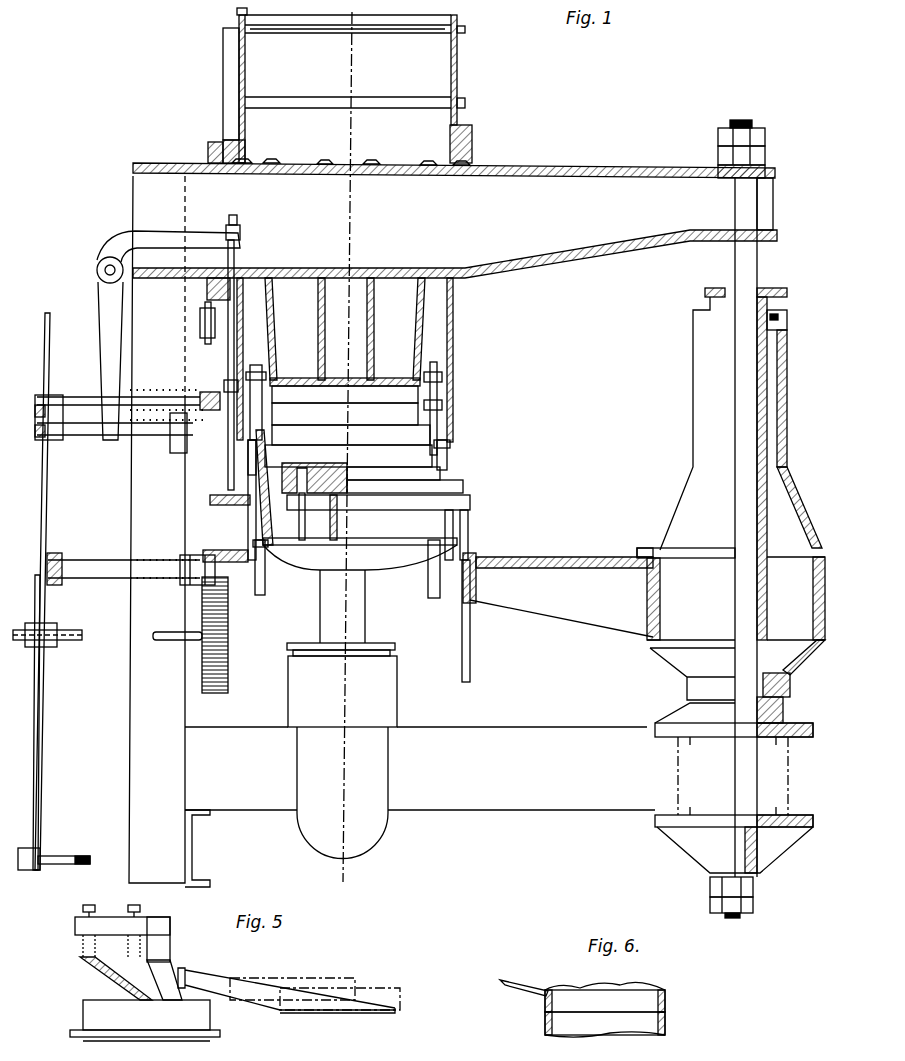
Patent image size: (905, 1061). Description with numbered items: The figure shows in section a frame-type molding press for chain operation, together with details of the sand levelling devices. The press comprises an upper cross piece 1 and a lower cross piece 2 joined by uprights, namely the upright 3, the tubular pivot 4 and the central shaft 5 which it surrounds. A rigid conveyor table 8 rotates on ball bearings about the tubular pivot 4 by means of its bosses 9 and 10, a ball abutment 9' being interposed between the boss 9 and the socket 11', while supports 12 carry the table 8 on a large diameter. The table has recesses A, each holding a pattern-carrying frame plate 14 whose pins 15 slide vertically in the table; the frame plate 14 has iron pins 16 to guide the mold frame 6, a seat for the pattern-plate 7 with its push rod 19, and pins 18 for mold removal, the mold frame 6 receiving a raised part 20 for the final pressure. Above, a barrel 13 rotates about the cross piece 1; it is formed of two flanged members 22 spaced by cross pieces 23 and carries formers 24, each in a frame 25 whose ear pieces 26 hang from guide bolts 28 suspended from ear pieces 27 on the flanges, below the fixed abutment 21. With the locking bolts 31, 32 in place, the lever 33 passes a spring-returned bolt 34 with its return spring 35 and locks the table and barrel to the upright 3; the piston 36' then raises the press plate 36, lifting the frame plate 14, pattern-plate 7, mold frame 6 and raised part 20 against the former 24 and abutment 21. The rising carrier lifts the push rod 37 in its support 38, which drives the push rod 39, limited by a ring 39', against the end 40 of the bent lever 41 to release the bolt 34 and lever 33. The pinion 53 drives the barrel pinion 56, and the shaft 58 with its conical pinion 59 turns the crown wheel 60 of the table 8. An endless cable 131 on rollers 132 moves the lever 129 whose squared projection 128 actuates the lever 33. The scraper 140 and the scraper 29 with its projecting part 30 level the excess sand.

In FIG. 1, the upper cross piece 1 is at (632, 185).
In FIG. 1, the lower cross piece 2 is at (566, 797).
In FIG. 1, the upright 3 is at (136, 791).
In FIG. 1, the tubular pivot 4 is at (760, 553).
In FIG. 1, the central shaft 5 is at (742, 790).
In FIG. 1, the mold frame 6 is at (262, 472).
In FIG. 5, the mold frame 6 is at (100, 1015).
In FIG. 6, the mold frame 6 is at (545, 1025).
In FIG. 1, the pattern-plate 7 is at (335, 470).
In FIG. 1, the table 8 is at (575, 560).
In FIG. 1, the boss 9 is at (806, 657).
In FIG. 1, the ball abutment 9' is at (791, 686).
In FIG. 1, the boss 10 is at (778, 440).
In FIG. 1, the socket 11' is at (786, 710).
In FIG. 1, the support 12 is at (470, 667).
In FIG. 1, the barrel 13 is at (455, 84).
In FIG. 1, the pattern-carrying frame plate 14 is at (455, 489).
In FIG. 1, the pin 15 is at (455, 517).
In FIG. 1, the iron pin 16 is at (448, 458).
In FIG. 1, the pin 18 is at (262, 596).
In FIG. 1, the push rod 19 is at (300, 520).
In FIG. 1, the raised part 20 is at (262, 440).
In FIG. 6, the raised part 20 is at (545, 1001).
In FIG. 1, the fixed abutment 21 is at (440, 298).
In FIG. 1, the flanged member 22 is at (228, 78).
In FIG. 1, the cross piece 23 is at (430, 20).
In FIG. 1, the former 24 is at (430, 426).
In FIG. 1, the frame 25 is at (266, 401).
In FIG. 1, the ear piece 26 is at (442, 406).
In FIG. 1, the ear piece 27 is at (445, 372).
In FIG. 1, the guide bolt 28 is at (442, 380).
In FIG. 5, the scraper 29 is at (105, 975).
In FIG. 5, the projecting part 30 is at (160, 967).
In FIG. 1, the locking bolt 31 is at (145, 400).
In FIG. 1, the locking bolt 32 is at (148, 565).
In FIG. 1, the lever 33 is at (45, 496).
In FIG. 1, the bolt 34 is at (80, 437).
In FIG. 1, the return spring 35 is at (178, 455).
In FIG. 1, the press plate 36 is at (360, 581).
In FIG. 1, the piston 36' is at (342, 714).
In FIG. 1, the push rod 37 is at (210, 500).
In FIG. 1, the support 38 is at (242, 450).
In FIG. 1, the push rod 39 is at (195, 365).
In FIG. 1, the ring 39' is at (210, 380).
In FIG. 1, the end of bent lever 40 is at (241, 240).
In FIG. 1, the bent lever 41 is at (118, 240).
In FIG. 1, the pinion 53 is at (200, 322).
In FIG. 1, the pinion 56 is at (205, 152).
In FIG. 1, the shaft 58 is at (155, 637).
In FIG. 1, the conical pinion 59 is at (228, 674).
In FIG. 1, the toothed crown wheel 60 is at (200, 583).
In FIG. 1, the squared projection 128 is at (58, 585).
In FIG. 1, the lever 129 is at (40, 710).
In FIG. 1, the endless cable 131 is at (35, 870).
In FIG. 1, the roller 132 is at (62, 856).
In FIG. 6, the scraper 140 is at (515, 978).
In FIG. 1, the recess A is at (455, 590).
In FIG. 1, the plate D is at (780, 237).
In FIG. 1, the plate E is at (140, 168).